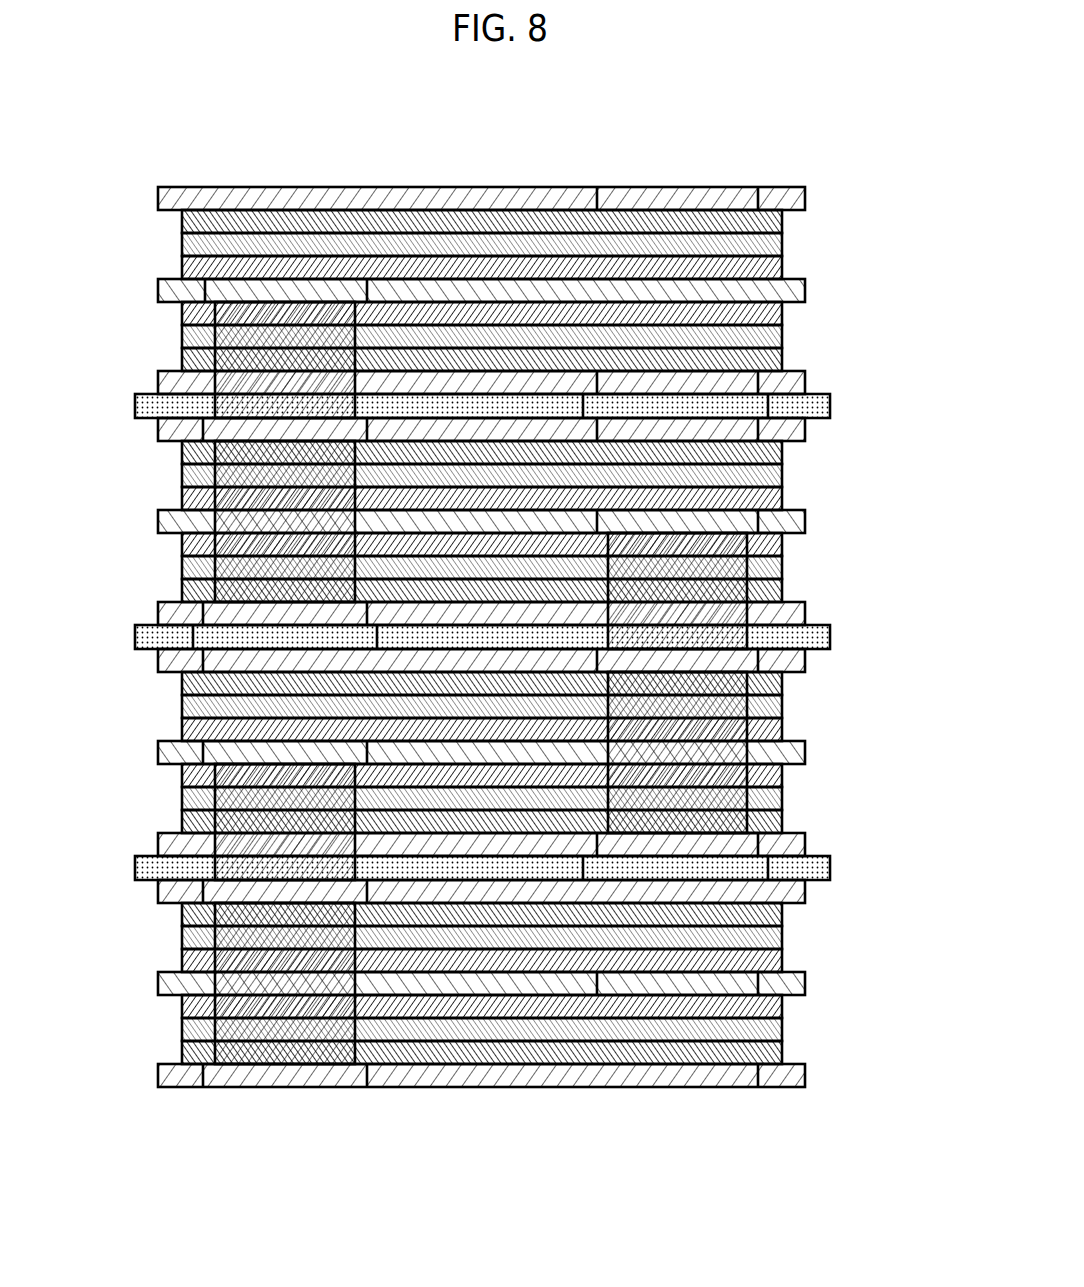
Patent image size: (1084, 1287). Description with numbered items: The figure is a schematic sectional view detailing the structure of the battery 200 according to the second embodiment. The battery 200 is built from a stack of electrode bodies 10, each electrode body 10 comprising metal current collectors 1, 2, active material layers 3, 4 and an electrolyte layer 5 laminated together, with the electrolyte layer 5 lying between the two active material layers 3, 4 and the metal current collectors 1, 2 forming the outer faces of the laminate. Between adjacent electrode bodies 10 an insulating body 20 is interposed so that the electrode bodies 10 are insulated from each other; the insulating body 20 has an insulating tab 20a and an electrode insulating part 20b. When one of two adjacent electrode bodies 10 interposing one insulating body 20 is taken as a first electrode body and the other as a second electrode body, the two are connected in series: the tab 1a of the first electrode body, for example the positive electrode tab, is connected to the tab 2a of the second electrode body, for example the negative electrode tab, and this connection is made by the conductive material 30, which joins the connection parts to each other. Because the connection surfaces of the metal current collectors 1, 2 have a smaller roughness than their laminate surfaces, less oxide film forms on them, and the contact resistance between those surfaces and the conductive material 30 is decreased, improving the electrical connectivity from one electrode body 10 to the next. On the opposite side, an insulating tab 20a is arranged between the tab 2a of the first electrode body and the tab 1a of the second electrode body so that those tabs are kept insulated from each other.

The battery 200 is at (506, 96).
The electrode body 10 is at (558, 650).
The metal current collector 1 is at (821, 195).
The tab 1a is at (855, 1193).
The metal current collector 2 is at (519, 637).
The tab 2a is at (862, 116).
The active material layer 3 is at (862, 1053).
The active material layer 4 is at (862, 1007).
The electrolyte layer 5 is at (862, 1030).
The insulating body 20 is at (502, 637).
The insulating tab 20a is at (437, 637).
The electrode insulating part 20b is at (141, 867).
The conductive material 30 is at (74, 338).